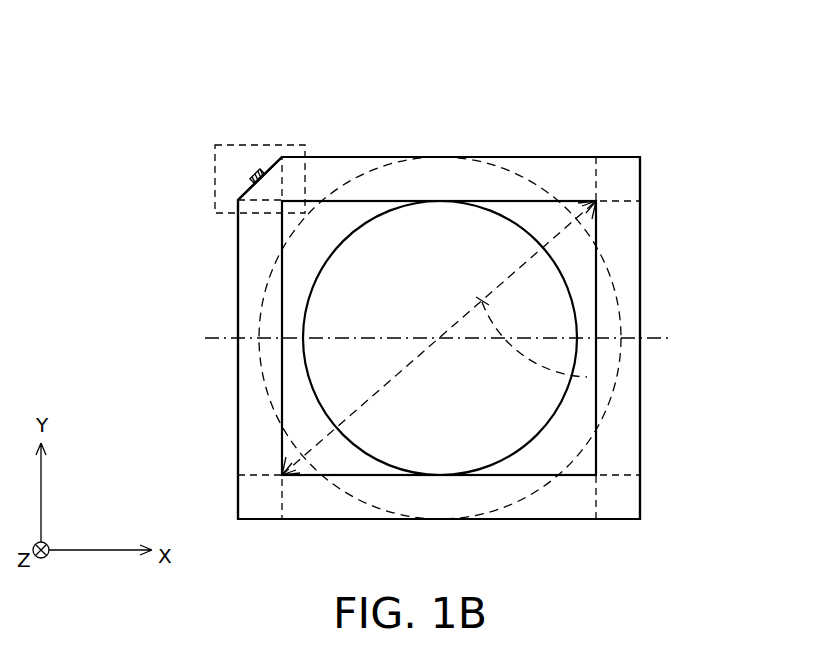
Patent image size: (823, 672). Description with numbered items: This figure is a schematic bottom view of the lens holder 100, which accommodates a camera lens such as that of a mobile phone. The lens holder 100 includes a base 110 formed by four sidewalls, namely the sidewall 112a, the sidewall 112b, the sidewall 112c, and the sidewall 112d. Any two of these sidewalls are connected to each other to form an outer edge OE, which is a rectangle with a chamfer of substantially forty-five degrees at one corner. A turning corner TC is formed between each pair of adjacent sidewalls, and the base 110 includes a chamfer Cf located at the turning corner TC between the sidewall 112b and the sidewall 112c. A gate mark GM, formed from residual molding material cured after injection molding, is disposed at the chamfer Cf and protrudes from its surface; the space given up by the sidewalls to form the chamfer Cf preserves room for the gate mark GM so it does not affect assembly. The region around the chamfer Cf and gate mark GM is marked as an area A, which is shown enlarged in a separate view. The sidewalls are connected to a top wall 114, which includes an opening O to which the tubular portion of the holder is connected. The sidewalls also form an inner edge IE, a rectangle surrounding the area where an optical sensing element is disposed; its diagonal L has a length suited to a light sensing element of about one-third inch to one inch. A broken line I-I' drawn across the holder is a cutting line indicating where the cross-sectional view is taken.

The lens holder 100 is at (729, 558).
The base 110 is at (637, 124).
The sidewall 112a is at (542, 503).
The sidewall 112b is at (247, 407).
The sidewall 112c is at (543, 157).
The sidewall 112d is at (632, 302).
The top wall 114 is at (596, 240).
The turning corner TC is at (238, 177).
The area A is at (216, 163).
The chamfer Cf is at (268, 161).
The gate mark GM is at (253, 172).
The outer edge OE is at (350, 156).
The inner edge IE is at (572, 199).
The diagonal L is at (590, 379).
The opening O is at (483, 392).
The broken line I-I' I is at (439, 340).